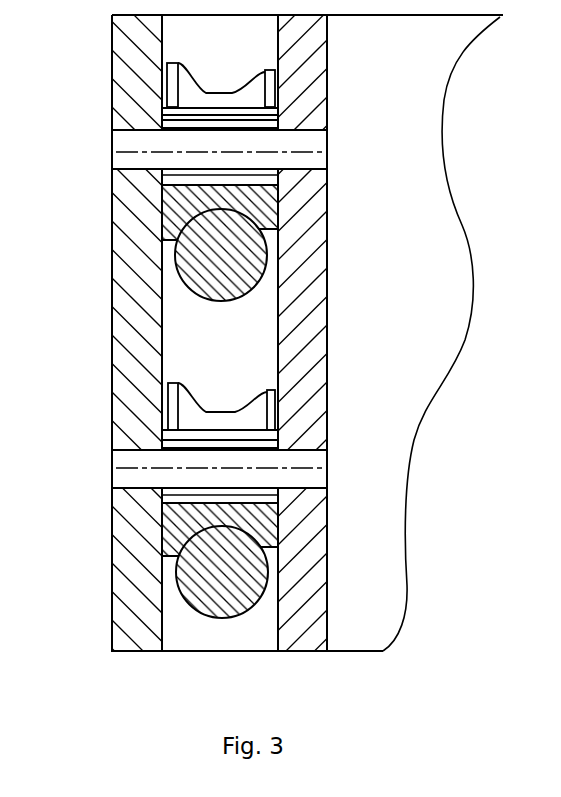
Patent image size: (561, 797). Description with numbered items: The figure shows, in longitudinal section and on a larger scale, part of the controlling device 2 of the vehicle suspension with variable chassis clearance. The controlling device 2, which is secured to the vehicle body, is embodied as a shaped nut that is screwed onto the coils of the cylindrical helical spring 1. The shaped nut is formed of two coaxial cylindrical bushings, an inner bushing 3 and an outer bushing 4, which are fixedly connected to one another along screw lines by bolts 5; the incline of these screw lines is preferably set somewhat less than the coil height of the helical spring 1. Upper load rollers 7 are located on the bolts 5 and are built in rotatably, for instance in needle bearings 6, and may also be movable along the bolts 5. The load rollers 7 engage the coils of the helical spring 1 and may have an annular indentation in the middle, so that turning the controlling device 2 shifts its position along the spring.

The cylindrical helical spring 1 is at (247, 572).
The controlling device 2 is at (97, 22).
The inner bushing 3 is at (307, 252).
The outer bushing 4 is at (140, 53).
The bolts 5 is at (317, 476).
The needle bearings 6 is at (270, 440).
The upper load rollers 7 is at (262, 408).